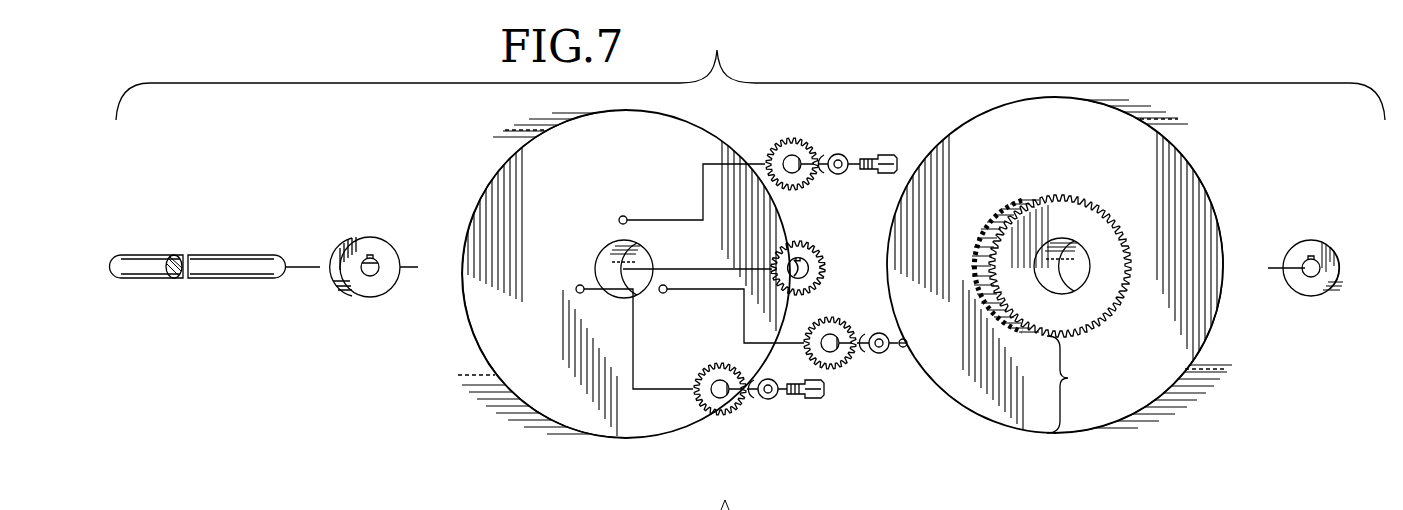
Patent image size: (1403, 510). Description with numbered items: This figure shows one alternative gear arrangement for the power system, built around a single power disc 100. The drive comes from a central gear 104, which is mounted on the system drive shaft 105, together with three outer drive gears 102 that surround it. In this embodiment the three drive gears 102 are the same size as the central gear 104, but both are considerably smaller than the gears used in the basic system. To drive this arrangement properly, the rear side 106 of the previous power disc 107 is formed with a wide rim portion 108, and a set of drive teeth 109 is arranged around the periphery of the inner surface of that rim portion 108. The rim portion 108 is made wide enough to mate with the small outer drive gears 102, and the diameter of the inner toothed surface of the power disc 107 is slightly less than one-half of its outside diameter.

The power disc 100 is at (478, 148).
The outer drive gears 102 is at (798, 140).
The central gear 104 is at (821, 255).
The system drive shaft 105 is at (258, 262).
The rear side 106 is at (1083, 264).
The previous power disc 107 is at (1217, 155).
The rim portion 108 is at (1068, 378).
The drive teeth 109 is at (1096, 222).